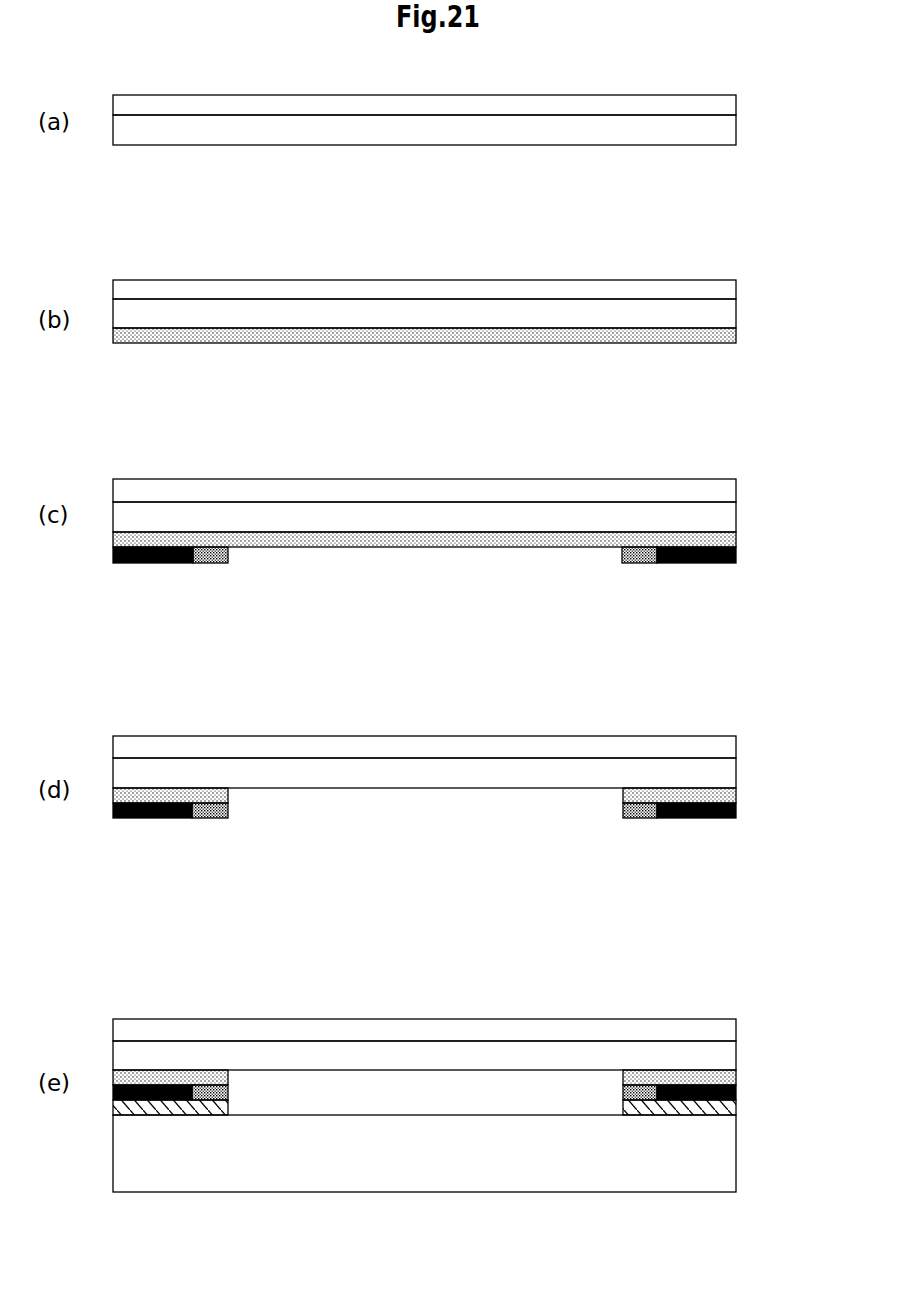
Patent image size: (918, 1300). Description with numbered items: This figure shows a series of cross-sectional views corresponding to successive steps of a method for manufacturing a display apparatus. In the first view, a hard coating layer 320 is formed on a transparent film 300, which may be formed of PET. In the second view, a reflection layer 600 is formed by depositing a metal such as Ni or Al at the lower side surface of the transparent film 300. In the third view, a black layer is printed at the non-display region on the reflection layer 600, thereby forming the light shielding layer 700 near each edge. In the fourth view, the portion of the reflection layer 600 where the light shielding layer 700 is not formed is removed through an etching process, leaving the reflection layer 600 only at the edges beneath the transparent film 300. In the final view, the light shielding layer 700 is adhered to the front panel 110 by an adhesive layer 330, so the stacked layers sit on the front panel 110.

The hard coating layer 320 is at (736, 98).
The transparent film 300 is at (736, 133).
The reflection layer 600 is at (736, 335).
The light shielding layer 700 is at (693, 565).
The adhesive layer 330 is at (708, 1116).
The front panel 110 is at (521, 1183).